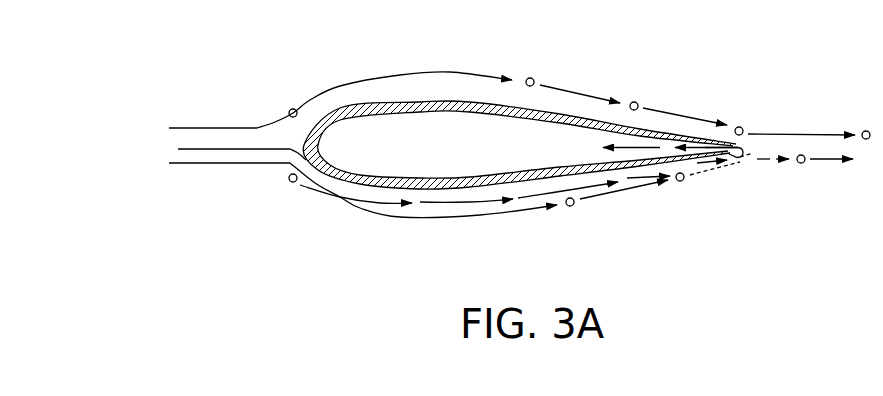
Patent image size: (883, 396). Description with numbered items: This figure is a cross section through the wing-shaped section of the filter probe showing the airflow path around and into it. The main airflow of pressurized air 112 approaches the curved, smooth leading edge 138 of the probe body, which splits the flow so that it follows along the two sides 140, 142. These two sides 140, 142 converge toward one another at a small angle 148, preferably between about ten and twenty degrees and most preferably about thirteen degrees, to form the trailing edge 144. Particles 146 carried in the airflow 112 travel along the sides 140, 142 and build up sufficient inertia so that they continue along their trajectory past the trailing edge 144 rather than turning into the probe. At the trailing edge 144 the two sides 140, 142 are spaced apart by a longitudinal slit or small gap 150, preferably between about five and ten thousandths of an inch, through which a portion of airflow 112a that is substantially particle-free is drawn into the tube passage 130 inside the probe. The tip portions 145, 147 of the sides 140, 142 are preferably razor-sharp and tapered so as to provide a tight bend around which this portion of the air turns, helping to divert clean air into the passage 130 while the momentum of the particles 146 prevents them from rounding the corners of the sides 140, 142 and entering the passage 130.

The pressurized air 112 is at (147, 143).
The portion of airflow 112a is at (644, 133).
The tube passage 130 is at (470, 158).
The leading edge 138 is at (294, 139).
The side 140 is at (448, 187).
The side 142 is at (465, 110).
The trailing edge 144 is at (749, 154).
The tip portion 145 is at (733, 126).
The particles 146 is at (532, 76).
The tip portion 147 is at (728, 156).
The angle 148 is at (695, 141).
The gap 150 is at (748, 133).